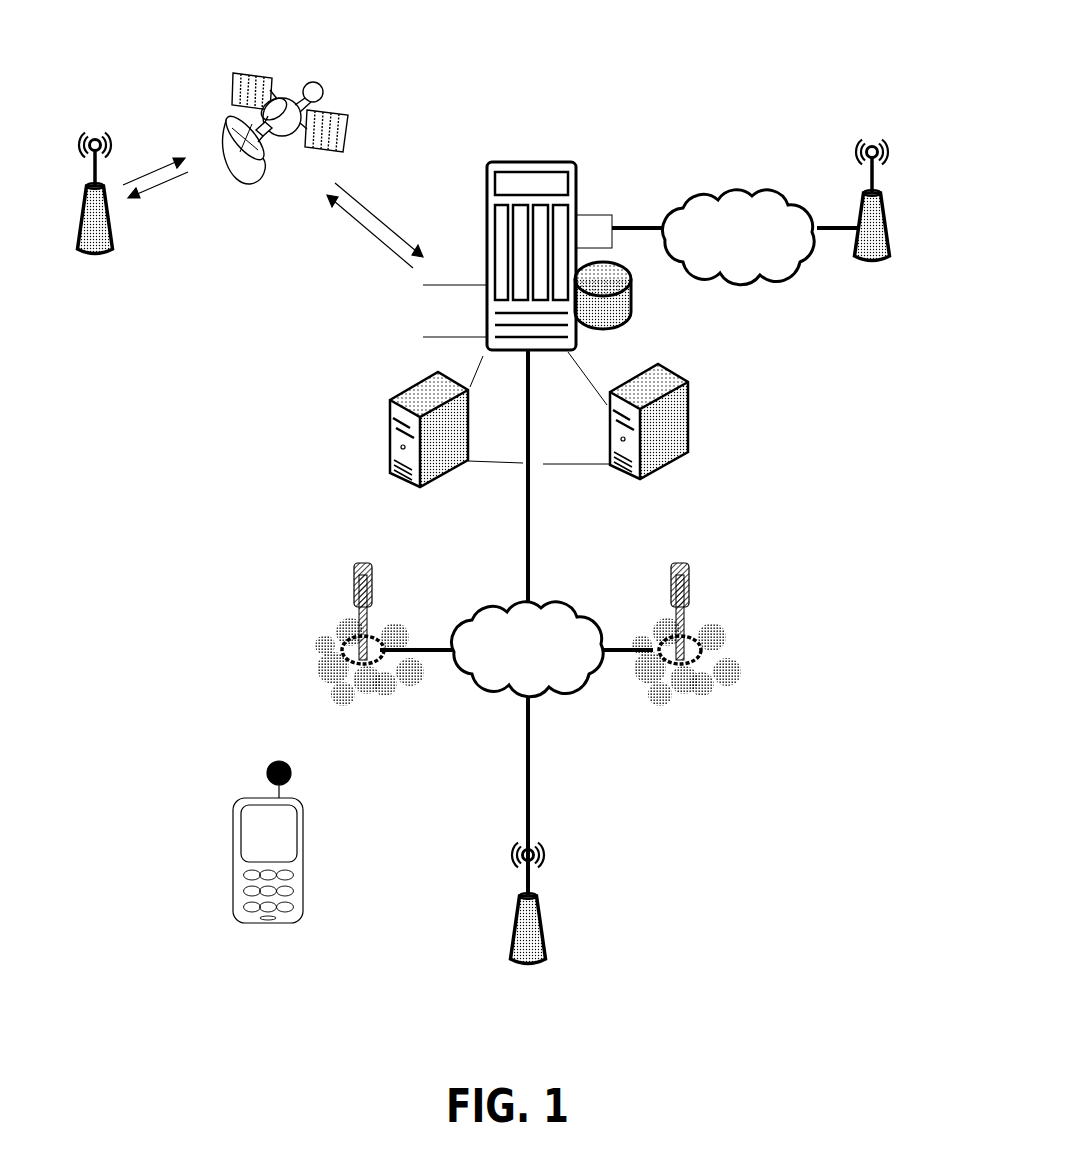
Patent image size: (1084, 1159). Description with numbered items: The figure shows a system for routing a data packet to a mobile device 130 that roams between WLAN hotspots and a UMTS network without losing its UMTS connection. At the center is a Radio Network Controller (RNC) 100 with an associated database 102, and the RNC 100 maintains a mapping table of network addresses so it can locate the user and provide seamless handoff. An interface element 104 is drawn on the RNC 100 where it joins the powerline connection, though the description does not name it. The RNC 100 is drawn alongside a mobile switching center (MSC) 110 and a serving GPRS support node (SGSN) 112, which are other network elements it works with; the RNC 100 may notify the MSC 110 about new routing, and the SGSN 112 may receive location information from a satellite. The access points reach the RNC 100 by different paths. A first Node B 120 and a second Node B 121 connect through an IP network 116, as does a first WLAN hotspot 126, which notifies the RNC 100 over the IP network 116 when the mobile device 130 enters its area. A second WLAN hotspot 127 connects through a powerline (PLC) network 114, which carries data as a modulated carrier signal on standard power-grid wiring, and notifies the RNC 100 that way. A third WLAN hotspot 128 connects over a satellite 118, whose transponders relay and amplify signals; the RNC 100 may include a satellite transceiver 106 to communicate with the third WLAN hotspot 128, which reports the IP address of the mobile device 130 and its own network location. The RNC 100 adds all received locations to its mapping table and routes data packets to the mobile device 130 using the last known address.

The Radio Network Controller (RNC) 100 is at (557, 165).
The database 102 is at (632, 320).
The PLC interface 104 is at (593, 220).
The satellite transceiver 106 is at (430, 317).
The mobile switching center (MSC) 110 is at (388, 425).
The serving GPRS support node (SGSN) 112 is at (665, 467).
The powerline network (PLC network) 114 is at (747, 275).
The IP network 116 is at (547, 610).
The satellite 118 is at (323, 82).
The first Node B 120 is at (338, 650).
The second Node B 121 is at (697, 640).
The first WLAN hotspot 126 is at (545, 927).
The second WLAN hotspot 127 is at (870, 207).
The third WLAN hotspot 128 is at (95, 255).
The mobile device 130 is at (235, 858).